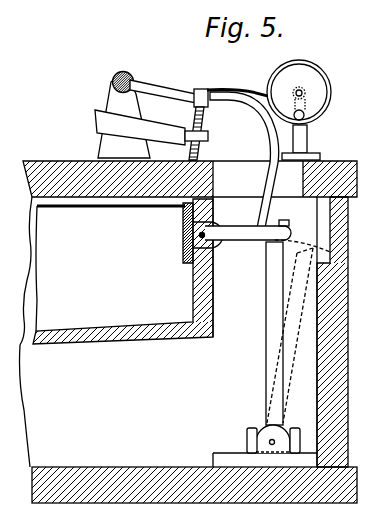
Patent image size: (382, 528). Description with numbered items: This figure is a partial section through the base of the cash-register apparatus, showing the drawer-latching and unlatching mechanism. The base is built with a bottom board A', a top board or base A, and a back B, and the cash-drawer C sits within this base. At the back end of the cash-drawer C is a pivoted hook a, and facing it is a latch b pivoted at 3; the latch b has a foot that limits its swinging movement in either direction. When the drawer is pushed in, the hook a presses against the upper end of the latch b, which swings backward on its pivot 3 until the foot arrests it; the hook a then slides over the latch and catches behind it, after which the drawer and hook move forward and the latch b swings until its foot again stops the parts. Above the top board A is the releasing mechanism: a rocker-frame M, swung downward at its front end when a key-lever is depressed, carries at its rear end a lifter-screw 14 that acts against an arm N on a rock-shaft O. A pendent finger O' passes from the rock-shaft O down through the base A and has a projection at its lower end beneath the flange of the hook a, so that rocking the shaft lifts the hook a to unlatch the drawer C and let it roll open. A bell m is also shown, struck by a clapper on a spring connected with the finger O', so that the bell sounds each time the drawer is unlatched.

The top board or base A is at (190, 169).
The bottom board A' is at (194, 473).
The back B is at (341, 332).
The cash-drawer C is at (117, 332).
The rock-shaft O is at (124, 115).
The pendent finger O' is at (253, 164).
The rocker-frame M is at (140, 127).
The arm N is at (159, 84).
The bell m is at (299, 110).
The hook a is at (272, 237).
The latch b is at (289, 333).
The lifter-screw 14 is at (204, 123).
The pivot 3 is at (273, 439).